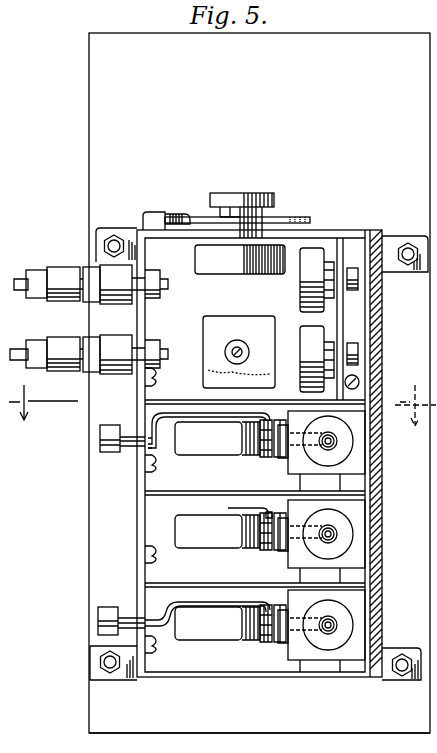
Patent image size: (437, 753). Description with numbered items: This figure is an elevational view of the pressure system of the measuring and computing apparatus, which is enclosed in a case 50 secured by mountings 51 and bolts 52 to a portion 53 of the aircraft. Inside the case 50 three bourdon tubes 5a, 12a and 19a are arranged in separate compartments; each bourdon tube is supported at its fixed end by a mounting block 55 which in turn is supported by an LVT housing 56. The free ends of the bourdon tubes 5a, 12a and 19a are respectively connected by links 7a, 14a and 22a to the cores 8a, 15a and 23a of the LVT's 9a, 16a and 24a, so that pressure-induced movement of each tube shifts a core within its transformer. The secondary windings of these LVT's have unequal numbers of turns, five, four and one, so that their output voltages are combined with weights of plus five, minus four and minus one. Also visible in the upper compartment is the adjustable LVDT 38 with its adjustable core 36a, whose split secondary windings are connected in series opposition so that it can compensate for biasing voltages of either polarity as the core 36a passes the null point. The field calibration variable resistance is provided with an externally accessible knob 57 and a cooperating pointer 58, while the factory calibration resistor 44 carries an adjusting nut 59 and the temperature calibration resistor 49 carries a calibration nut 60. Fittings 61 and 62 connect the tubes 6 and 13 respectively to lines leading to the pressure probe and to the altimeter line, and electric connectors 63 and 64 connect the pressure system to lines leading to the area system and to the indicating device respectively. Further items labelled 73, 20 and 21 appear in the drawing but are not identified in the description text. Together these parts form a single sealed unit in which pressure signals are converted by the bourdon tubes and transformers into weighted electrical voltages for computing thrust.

The case 50 is at (135, 552).
The mountings 51 is at (103, 230).
The bolts 52 is at (117, 240).
The portion of the aircraft 53 is at (259, 715).
The knob 57 is at (233, 197).
The pointer 58 is at (152, 212).
The adjusting nut 59 is at (357, 266).
The calibration nut 60 is at (356, 343).
The fitting 61 is at (108, 608).
The fitting 62 is at (106, 453).
The electric connector 63 is at (40, 345).
The electric connector 64 is at (36, 270).
The coil 73 is at (222, 263).
The adjustable LVDT 38 is at (238, 307).
The adjustable core 36a is at (231, 352).
The variable resistor 44 is at (317, 280).
The variable resistor 49 is at (317, 359).
The tube 6 is at (170, 604).
The tube 13 is at (192, 425).
The bourdon tube 12a is at (190, 455).
The link 14a is at (296, 434).
The core 15a is at (334, 436).
The LVT 16a is at (328, 441).
The bourdon tube 19a is at (190, 548).
The lead wire 20 is at (235, 508).
The terminal 21 is at (270, 505).
The link 22a is at (296, 524).
The core 23a is at (334, 529).
The LVT 24a is at (328, 534).
The mounting block 55 is at (266, 556).
The LVT housing 56 is at (282, 562).
The bourdon tube 5a is at (208, 642).
The link 7a is at (295, 620).
The core 8a is at (334, 620).
The LVT 9a is at (328, 625).